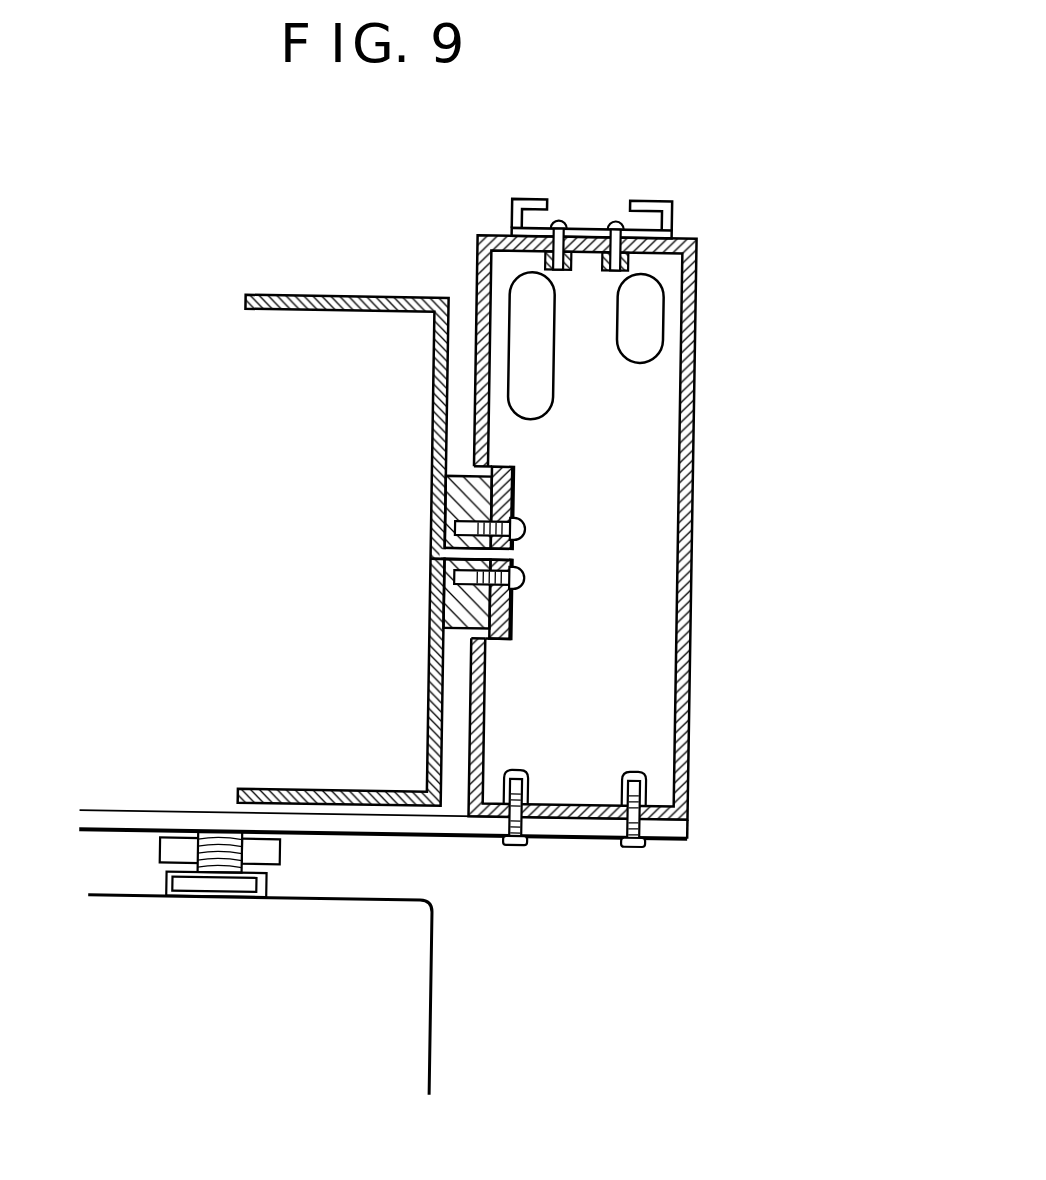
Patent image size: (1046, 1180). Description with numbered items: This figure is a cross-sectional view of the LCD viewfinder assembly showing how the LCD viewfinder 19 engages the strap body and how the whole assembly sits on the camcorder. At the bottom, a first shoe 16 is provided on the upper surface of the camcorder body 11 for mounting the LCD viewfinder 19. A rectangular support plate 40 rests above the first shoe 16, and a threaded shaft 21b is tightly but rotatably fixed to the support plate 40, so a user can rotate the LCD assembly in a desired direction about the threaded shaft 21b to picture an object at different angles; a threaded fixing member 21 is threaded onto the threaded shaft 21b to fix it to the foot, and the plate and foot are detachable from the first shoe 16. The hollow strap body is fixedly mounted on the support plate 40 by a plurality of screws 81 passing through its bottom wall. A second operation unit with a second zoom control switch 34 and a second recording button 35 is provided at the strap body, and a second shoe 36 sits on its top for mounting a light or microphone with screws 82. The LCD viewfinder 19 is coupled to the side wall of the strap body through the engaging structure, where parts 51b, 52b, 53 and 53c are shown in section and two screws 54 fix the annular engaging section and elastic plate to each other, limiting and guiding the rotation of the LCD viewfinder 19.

The camcorder body 11 is at (407, 1008).
The first shoe 16 is at (187, 890).
The LCD viewfinder 19 is at (328, 296).
The fixing member 21 is at (273, 857).
The threaded shaft 21b is at (197, 848).
The second zoom control switch 34 is at (517, 328).
The second recording button 35 is at (658, 322).
The second shoe 36 is at (673, 207).
The support plate 40 is at (601, 830).
The bracket plate 51b is at (513, 493).
The spacer block 52b is at (437, 555).
The lower block assembly 53 is at (513, 602).
The contact surface 53c is at (510, 558).
The screws 54 is at (520, 528).
The screws 81 is at (632, 845).
The screws 82 is at (678, 240).